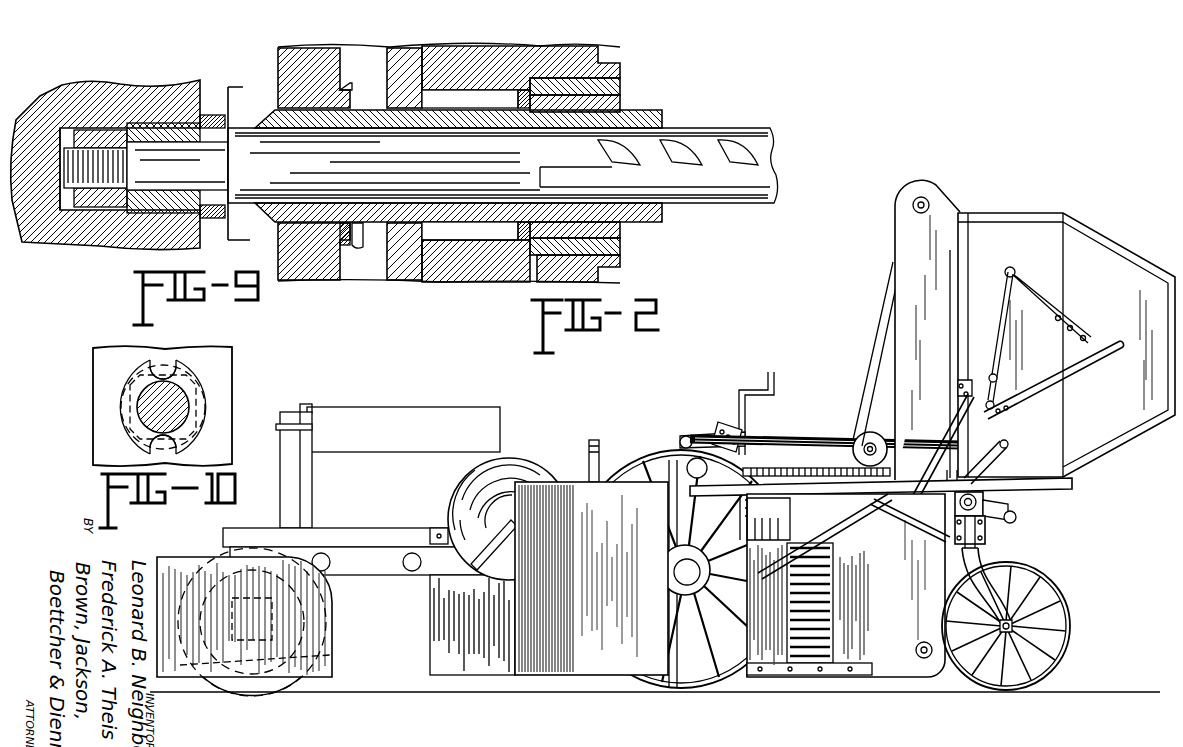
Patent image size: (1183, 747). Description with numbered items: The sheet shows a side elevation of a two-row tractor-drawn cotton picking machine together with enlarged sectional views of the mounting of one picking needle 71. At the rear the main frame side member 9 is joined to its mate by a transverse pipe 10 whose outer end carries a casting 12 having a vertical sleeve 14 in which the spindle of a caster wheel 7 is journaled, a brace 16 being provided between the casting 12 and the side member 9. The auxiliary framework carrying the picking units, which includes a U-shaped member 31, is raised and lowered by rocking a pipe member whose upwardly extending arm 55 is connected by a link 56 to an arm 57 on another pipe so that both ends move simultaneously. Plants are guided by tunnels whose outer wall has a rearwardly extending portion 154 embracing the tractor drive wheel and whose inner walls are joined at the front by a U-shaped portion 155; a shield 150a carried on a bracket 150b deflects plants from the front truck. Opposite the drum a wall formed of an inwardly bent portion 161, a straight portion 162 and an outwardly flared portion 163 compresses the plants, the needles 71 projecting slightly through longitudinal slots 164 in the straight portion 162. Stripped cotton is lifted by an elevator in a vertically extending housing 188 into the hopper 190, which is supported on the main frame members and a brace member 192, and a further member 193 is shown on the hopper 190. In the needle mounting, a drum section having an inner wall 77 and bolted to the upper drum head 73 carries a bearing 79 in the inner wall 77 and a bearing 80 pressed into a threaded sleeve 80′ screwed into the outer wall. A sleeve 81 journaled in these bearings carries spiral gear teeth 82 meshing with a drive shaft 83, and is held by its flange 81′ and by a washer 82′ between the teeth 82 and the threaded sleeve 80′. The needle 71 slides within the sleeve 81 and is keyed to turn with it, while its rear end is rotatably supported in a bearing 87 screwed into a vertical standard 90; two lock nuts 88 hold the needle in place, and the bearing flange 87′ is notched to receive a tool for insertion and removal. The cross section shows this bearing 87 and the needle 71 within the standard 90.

In FIG. 2, the caster wheel 7 is at (1058, 616).
In FIG. 2, the side member 9 is at (1060, 482).
In FIG. 9, the transverse pipe 10 is at (246, 162).
In FIG. 2, the casting 12 is at (987, 526).
In FIG. 2, the vertical sleeve 14 is at (986, 540).
In FIG. 2, the brace 16 is at (905, 530).
In FIG. 2, the U-shaped member 31 is at (843, 648).
In FIG. 2, the upwardly extending arm 55 is at (726, 436).
In FIG. 2, the link 56 is at (809, 436).
In FIG. 2, the arm 57 is at (995, 457).
In FIG. 9, the picking needle 71 is at (710, 140).
In FIG. 10, the picking needle 71 is at (165, 407).
In FIG. 9, the upper drum head 73 is at (570, 270).
In FIG. 9, the inner wall 77 is at (308, 262).
In FIG. 9, the bearing 79 is at (275, 230).
In FIG. 9, the bearing 80 is at (622, 222).
In FIG. 9, the threaded sleeve 80′ is at (605, 242).
In FIG. 9, the sleeve 81 is at (628, 120).
In FIG. 9, the flange 81′ is at (346, 246).
In FIG. 9, the spiral gear teeth 82 is at (480, 78).
In FIG. 9, the washer 82′ is at (510, 262).
In FIG. 9, the drive shaft 83 is at (425, 62).
In FIG. 9, the bearing 87 is at (166, 125).
In FIG. 10, the bearing 87 is at (125, 368).
In FIG. 10, the flange 87′ is at (208, 405).
In FIG. 9, the lock nut 88 is at (112, 132).
In FIG. 10, the lock nut 88 is at (132, 392).
In FIG. 9, the vertical standard 90 is at (90, 226).
In FIG. 10, the vertical standard 90 is at (215, 447).
In FIG. 2, the shield 150a is at (172, 571).
In FIG. 2, the bracket 150b is at (282, 660).
In FIG. 2, the rearwardly extending portion 154 is at (600, 645).
In FIG. 2, the U-shaped portion 155 is at (447, 615).
In FIG. 2, the inwardly bent portion 161 is at (770, 658).
In FIG. 2, the straight portion 162 is at (800, 660).
In FIG. 2, the outwardly flared portion 163 is at (860, 650).
In FIG. 2, the longitudinal slot 164 is at (815, 635).
In FIG. 2, the vertically extending housing 188 is at (903, 222).
In FIG. 2, the hopper 190 is at (1088, 224).
In FIG. 2, the brace member 192 is at (954, 414).
In FIG. 2, the hopper lever linkage 193 is at (1095, 362).